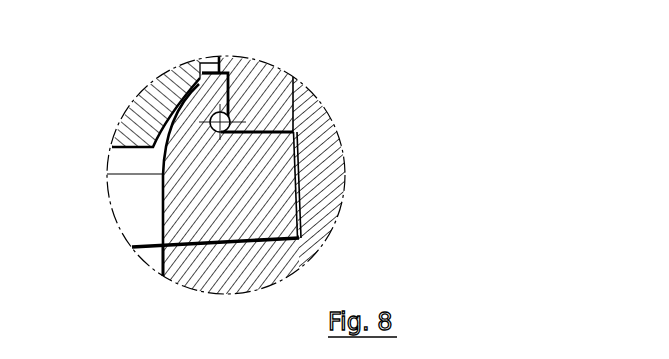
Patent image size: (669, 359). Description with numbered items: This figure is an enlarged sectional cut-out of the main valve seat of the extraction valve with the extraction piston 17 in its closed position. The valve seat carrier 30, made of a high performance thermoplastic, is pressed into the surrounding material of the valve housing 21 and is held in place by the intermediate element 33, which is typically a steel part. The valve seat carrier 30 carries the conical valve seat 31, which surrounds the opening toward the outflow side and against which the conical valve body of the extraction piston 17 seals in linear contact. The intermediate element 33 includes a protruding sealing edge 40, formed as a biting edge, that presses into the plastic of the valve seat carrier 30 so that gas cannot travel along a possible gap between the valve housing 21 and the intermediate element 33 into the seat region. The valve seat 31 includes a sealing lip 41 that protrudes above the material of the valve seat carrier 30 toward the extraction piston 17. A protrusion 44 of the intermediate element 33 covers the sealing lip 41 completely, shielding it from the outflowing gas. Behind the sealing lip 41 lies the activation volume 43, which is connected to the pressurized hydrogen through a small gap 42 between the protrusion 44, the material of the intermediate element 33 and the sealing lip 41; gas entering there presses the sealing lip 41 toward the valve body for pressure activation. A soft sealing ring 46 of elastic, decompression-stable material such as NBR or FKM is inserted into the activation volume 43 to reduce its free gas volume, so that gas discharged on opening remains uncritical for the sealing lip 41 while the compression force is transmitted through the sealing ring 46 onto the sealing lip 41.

The extraction piston 17 is at (134, 120).
The valve housing 21 is at (212, 270).
The valve seat carrier 30 is at (193, 218).
The valve seat 31 is at (190, 95).
The intermediate element 33 is at (274, 96).
The sealing edge 40 is at (283, 138).
The sealing lip 41 is at (218, 92).
The gap 42 is at (186, 92).
The activation volume 43 is at (327, 185).
The protrusion 44 is at (214, 62).
The sealing ring 46 is at (199, 61).